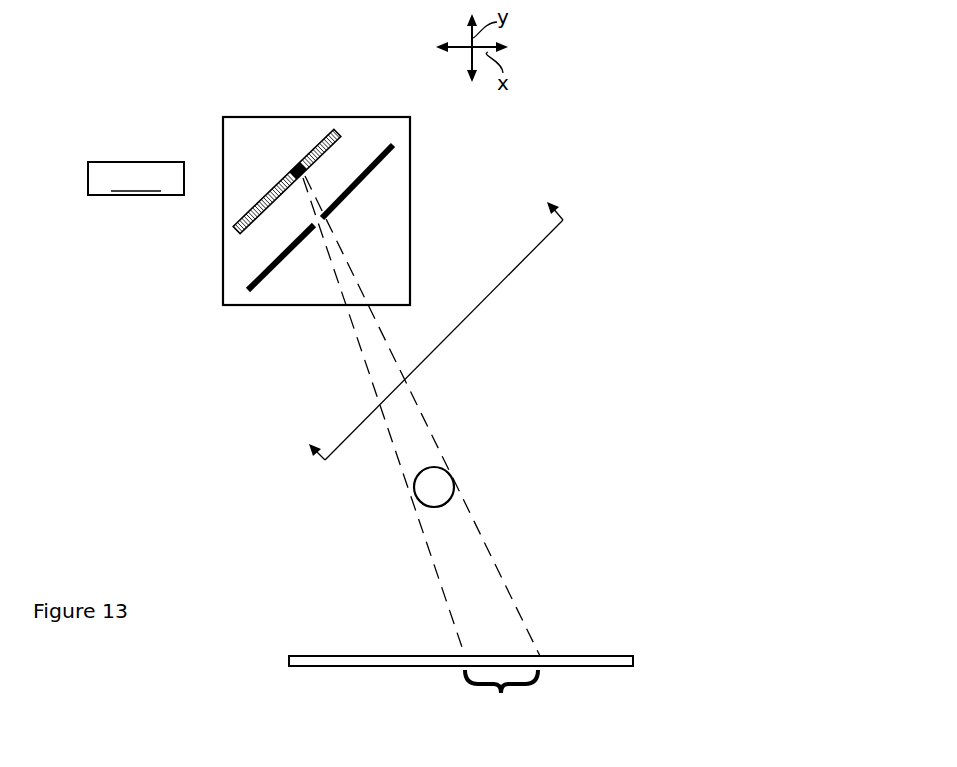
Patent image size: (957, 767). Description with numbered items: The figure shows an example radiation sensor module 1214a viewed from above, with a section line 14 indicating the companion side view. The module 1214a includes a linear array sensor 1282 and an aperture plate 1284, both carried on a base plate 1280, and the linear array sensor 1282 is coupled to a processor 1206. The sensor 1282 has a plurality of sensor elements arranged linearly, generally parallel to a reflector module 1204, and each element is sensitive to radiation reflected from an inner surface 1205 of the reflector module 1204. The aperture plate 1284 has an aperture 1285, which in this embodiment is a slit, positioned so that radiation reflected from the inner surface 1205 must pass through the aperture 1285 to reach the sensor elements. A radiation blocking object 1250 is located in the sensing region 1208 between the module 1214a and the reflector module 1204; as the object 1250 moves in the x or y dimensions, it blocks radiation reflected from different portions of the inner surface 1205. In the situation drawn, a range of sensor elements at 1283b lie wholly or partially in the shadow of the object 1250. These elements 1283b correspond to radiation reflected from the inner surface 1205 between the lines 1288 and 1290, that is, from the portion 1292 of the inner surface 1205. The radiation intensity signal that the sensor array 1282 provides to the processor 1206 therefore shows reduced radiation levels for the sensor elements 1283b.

The processor 1206 is at (247, 212).
The sensing region 1208 is at (510, 390).
The linear array sensor 1282 is at (288, 173).
The sensor elements in shadow 1283b is at (298, 162).
The base plate 1280 is at (372, 130).
The aperture plate 1284 is at (278, 270).
The aperture 1285 is at (303, 221).
The radiation sensor module 1214a is at (165, 336).
The section line 14 is at (440, 339).
The line 1290 is at (428, 545).
The line 1288 is at (487, 548).
The radiation blocking object 1250 is at (443, 485).
The inner surface 1205 is at (318, 656).
The reflector module 1204 is at (430, 660).
The portion of inner surface 1292 is at (502, 694).